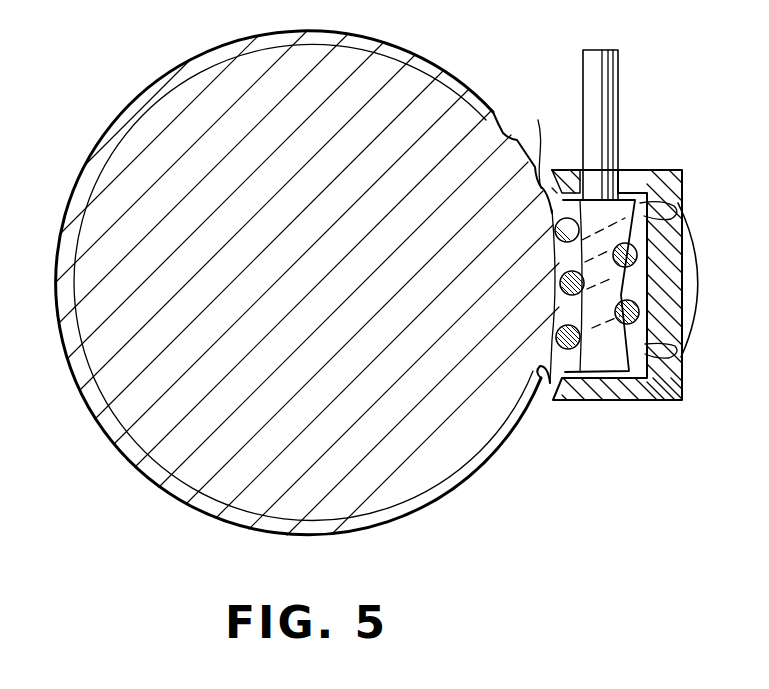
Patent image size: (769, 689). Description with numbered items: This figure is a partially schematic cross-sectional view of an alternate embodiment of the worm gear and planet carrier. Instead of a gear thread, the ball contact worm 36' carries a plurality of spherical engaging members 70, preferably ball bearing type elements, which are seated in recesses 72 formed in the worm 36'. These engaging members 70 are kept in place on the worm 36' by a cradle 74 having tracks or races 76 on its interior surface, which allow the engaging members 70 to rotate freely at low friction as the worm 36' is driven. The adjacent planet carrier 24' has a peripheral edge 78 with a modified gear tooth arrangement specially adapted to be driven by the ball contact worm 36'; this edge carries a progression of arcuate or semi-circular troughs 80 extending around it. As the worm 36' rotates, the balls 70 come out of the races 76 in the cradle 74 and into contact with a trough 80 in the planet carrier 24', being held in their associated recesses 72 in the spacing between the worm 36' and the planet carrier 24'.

The planet carrier 24' is at (307, 283).
The peripheral edge 78 is at (462, 76).
The troughs 80 is at (503, 133).
The cradle 74 is at (637, 170).
The ball contact worm 36' is at (603, 258).
The spherical engaging members 70 is at (560, 332).
The recesses 72 is at (639, 311).
The tracks or races 76 is at (680, 213).